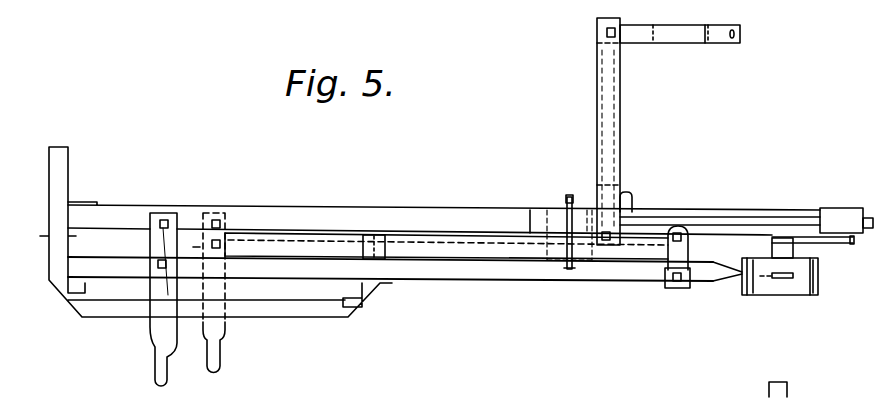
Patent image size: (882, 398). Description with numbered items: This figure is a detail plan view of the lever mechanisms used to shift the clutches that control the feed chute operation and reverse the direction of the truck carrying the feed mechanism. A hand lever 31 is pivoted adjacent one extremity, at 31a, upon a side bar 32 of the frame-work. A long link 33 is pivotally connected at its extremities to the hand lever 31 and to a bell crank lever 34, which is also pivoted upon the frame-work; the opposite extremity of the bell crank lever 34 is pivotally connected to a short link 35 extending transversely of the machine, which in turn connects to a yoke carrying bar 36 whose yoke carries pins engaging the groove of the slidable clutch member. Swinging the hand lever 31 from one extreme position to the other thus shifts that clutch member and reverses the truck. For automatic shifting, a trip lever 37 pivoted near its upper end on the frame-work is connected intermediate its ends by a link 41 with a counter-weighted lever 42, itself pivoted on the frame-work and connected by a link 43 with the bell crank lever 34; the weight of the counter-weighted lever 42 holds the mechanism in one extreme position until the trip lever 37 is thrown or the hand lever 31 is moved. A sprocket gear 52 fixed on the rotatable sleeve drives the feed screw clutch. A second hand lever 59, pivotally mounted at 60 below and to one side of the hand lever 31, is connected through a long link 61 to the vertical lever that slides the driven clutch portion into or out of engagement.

The hand lever 31 is at (152, 337).
The pivot of hand lever 31a is at (163, 220).
The side bar 32 is at (87, 213).
The long link 33 is at (433, 270).
The bell crank lever 34 is at (688, 252).
The short link 35 is at (612, 140).
The yoke carrying bar 36 is at (694, 44).
The trip lever 37 is at (860, 243).
The link 41 is at (827, 242).
The counter-weighted lever 42 is at (788, 279).
The link 43 is at (714, 277).
The sprocket gear 52 is at (568, 197).
The hand lever 59 is at (213, 340).
The pivot of hand lever 60 is at (217, 220).
The long link 61 is at (422, 248).